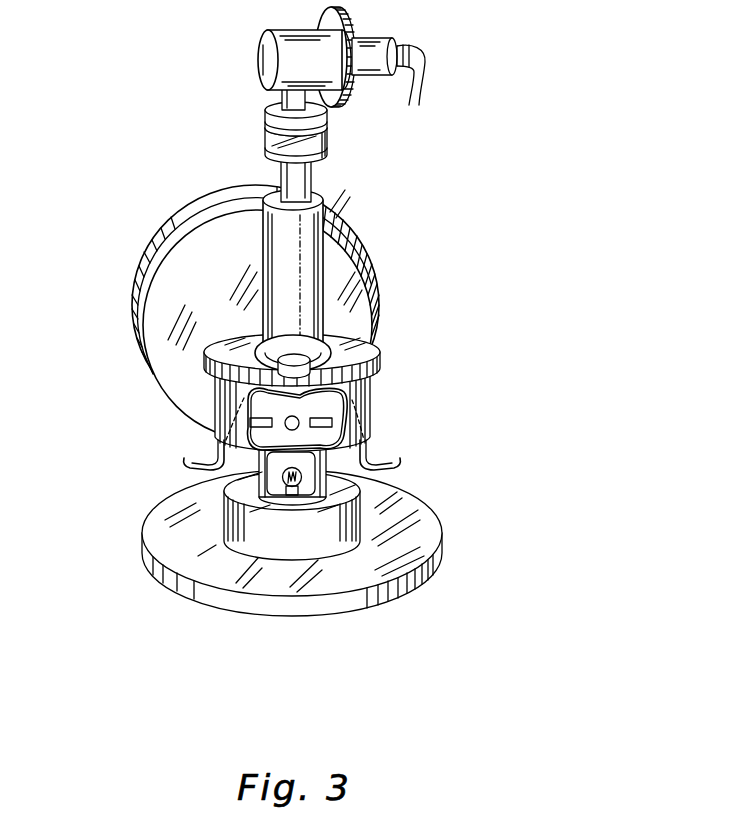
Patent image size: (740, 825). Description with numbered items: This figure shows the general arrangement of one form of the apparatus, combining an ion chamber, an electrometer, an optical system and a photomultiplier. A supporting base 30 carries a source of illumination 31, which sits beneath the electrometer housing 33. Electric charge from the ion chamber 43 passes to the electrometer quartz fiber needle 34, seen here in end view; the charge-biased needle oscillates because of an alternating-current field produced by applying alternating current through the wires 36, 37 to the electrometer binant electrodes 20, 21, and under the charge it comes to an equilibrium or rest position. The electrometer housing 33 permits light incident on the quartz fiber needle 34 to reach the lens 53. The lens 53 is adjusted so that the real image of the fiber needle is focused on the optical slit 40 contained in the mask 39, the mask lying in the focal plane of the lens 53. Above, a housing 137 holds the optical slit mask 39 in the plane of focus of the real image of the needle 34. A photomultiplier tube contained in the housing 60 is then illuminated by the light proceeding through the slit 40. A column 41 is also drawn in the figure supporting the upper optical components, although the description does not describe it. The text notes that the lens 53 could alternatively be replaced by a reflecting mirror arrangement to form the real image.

The housing 60 is at (268, 52).
The housing 137 is at (272, 103).
The mask 39 is at (272, 128).
The optical slit 40 is at (270, 147).
The ion chamber 43 is at (163, 235).
The column 41 is at (323, 262).
The lens 53 is at (330, 337).
The quartz fiber needle 34 is at (270, 420).
The binant electrode 21 is at (258, 406).
The binant electrode 20 is at (300, 421).
The electrometer housing 33 is at (243, 412).
The wire 36 is at (377, 462).
The wire 37 is at (192, 465).
The source of illumination 31 is at (279, 487).
The supporting base 30 is at (210, 600).